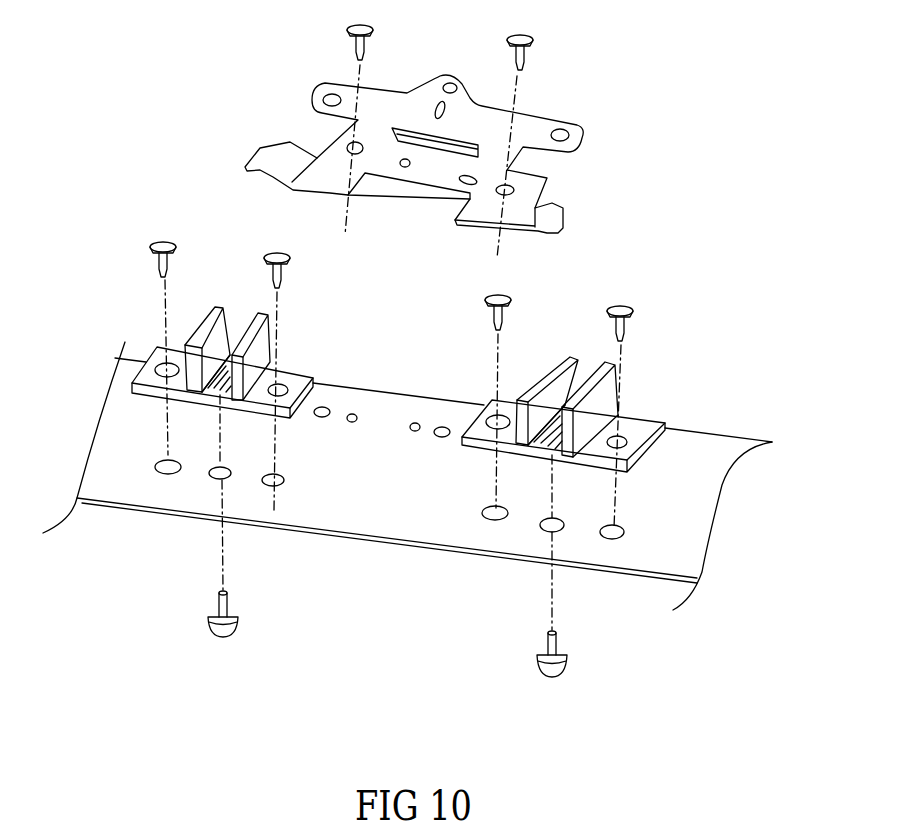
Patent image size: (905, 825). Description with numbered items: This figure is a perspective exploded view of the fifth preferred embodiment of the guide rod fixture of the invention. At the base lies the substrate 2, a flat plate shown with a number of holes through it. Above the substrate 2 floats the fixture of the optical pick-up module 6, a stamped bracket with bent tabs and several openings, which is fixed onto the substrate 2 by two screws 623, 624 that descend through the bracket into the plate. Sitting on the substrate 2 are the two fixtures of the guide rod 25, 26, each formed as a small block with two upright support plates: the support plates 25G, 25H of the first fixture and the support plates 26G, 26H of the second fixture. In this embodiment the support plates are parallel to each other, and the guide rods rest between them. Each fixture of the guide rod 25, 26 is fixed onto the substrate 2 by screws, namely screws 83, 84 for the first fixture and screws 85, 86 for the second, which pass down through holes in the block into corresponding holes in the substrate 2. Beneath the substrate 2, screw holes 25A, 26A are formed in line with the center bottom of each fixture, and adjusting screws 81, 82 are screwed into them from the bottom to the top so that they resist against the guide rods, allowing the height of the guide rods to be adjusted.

The substrate 2 is at (390, 518).
The fixture of the optical pick-up module 6 is at (565, 97).
The fixture of the guide rod 25 is at (118, 368).
The screw hole 25A is at (213, 477).
The support plate 25G is at (203, 327).
The support plate 25H is at (260, 352).
The fixture of the guide rod 26 is at (653, 453).
The screw hole 26A is at (540, 533).
The support plate 26G is at (540, 387).
The support plate 26H is at (597, 395).
The adjusting screw 81 is at (563, 678).
The adjusting screw 82 is at (233, 640).
The screw 83 is at (160, 243).
The screw 84 is at (286, 256).
The screw 85 is at (507, 293).
The screw 86 is at (631, 312).
The screw 623 is at (347, 28).
The screw 624 is at (532, 36).